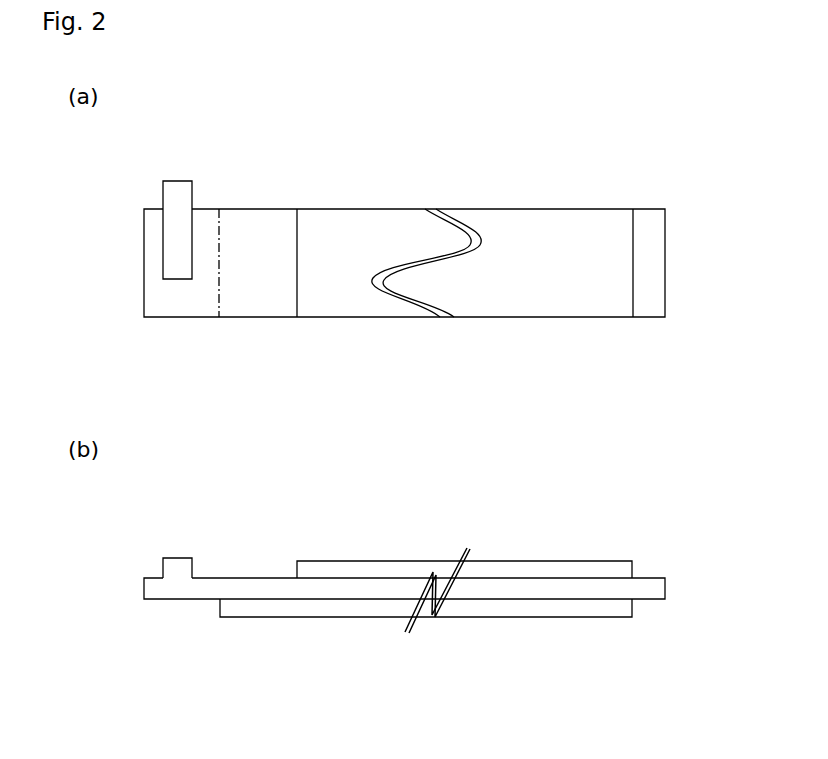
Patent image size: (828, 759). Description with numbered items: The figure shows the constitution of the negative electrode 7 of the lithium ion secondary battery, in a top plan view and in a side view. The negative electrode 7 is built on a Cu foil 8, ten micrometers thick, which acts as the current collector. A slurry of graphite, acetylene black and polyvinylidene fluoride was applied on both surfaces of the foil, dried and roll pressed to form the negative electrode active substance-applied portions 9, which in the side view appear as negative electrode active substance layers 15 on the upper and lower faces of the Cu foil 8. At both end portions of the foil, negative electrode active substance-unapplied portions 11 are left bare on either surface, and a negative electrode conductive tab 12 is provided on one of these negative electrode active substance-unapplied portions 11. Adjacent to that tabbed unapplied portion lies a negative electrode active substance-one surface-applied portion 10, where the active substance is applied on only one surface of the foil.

The negative electrode 7 is at (360, 388).
The Cu foil 8 is at (610, 590).
The negative electrode active substance-applied portion 9 is at (322, 226).
The negative electrode active substance-one surface-applied portion 10 is at (260, 303).
The negative electrode active substance-unapplied portion 11 is at (167, 290).
The negative electrode conductive tab 12 is at (183, 195).
The negative electrode active substance layer 15 is at (503, 561).